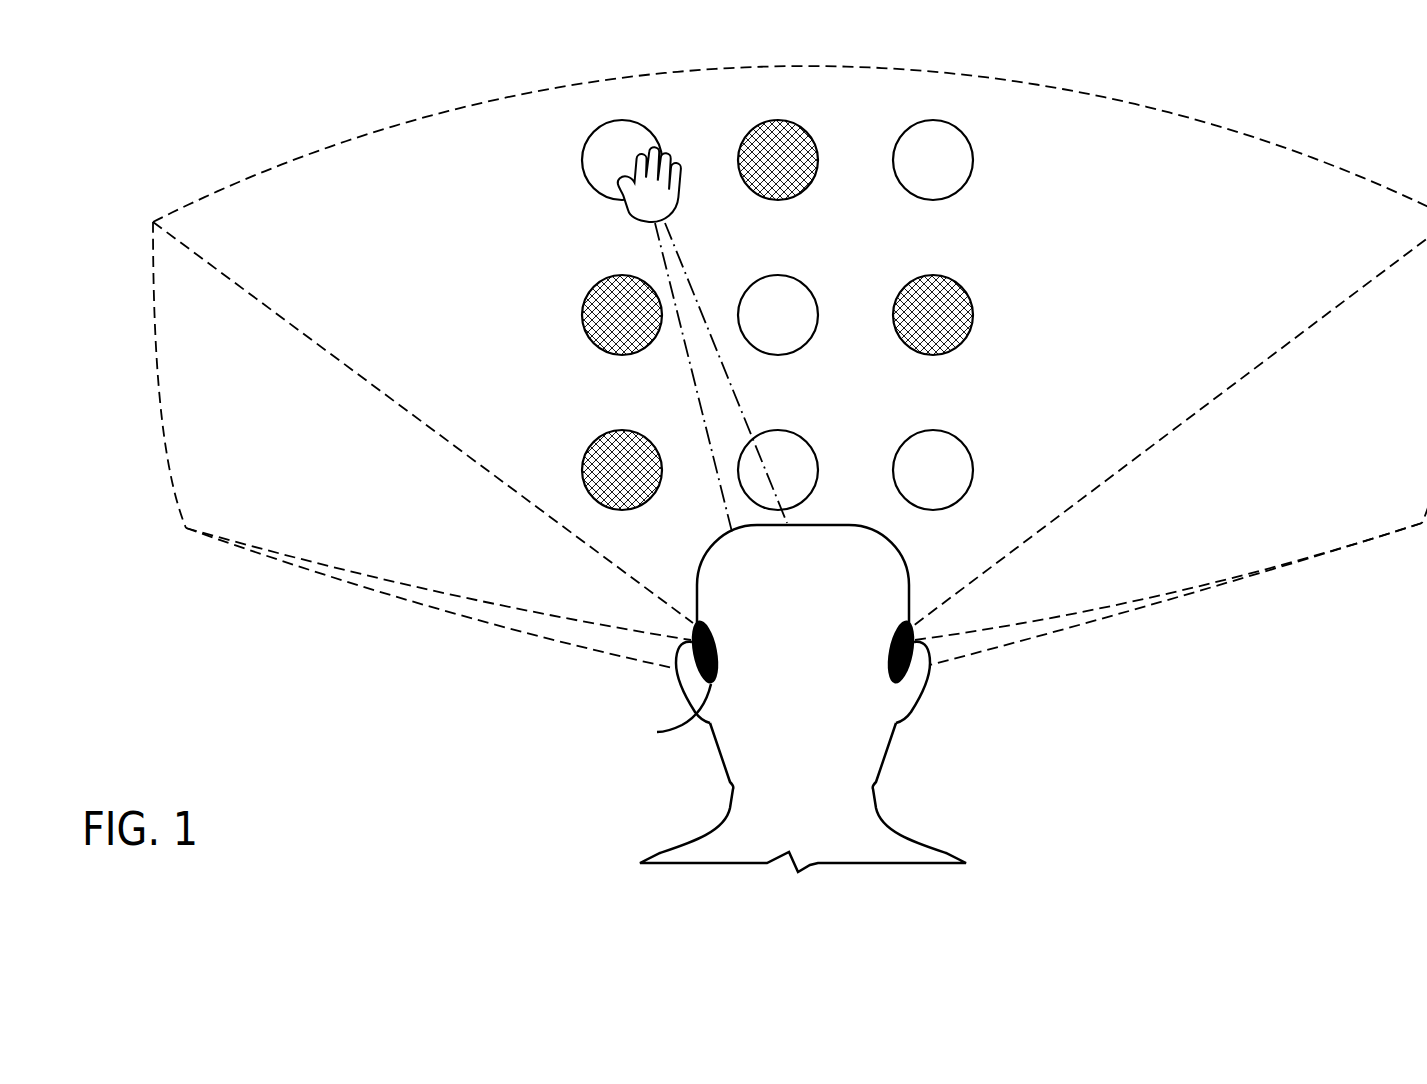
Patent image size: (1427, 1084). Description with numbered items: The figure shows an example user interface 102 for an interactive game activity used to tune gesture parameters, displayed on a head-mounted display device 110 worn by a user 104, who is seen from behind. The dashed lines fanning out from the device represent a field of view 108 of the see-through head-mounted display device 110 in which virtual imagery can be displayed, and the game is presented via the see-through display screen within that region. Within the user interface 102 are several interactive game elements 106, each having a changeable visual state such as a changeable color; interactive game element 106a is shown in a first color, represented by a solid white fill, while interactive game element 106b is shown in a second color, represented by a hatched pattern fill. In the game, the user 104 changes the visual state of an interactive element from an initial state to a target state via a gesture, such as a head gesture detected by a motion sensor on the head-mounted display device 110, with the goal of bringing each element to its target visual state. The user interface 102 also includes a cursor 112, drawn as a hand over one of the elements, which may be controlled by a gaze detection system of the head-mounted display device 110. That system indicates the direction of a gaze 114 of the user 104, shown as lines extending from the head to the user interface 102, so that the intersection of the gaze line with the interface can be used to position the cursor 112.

The user interface 102 is at (871, 95).
The user 104 is at (818, 636).
The interactive game elements 106 is at (735, 295).
The interactive game element 106a is at (596, 129).
The interactive game element 106b is at (752, 129).
The field of view 108 is at (388, 127).
The head-mounted display device 110 is at (657, 732).
The cursor 112 is at (675, 203).
The gaze 114 is at (748, 389).